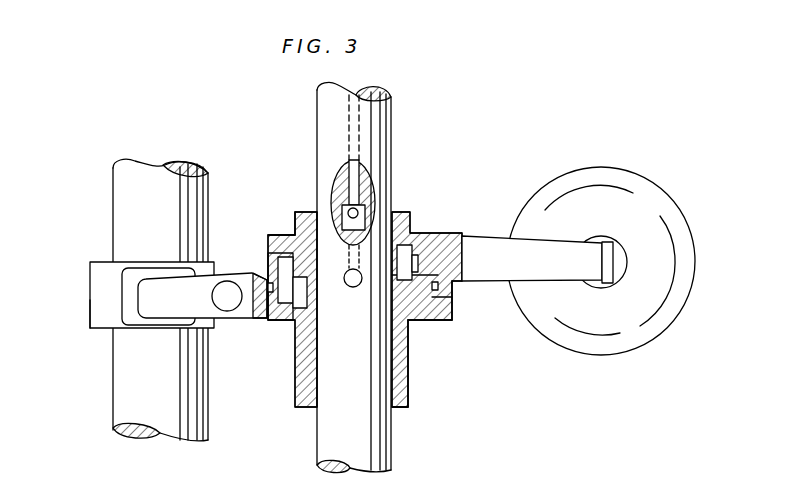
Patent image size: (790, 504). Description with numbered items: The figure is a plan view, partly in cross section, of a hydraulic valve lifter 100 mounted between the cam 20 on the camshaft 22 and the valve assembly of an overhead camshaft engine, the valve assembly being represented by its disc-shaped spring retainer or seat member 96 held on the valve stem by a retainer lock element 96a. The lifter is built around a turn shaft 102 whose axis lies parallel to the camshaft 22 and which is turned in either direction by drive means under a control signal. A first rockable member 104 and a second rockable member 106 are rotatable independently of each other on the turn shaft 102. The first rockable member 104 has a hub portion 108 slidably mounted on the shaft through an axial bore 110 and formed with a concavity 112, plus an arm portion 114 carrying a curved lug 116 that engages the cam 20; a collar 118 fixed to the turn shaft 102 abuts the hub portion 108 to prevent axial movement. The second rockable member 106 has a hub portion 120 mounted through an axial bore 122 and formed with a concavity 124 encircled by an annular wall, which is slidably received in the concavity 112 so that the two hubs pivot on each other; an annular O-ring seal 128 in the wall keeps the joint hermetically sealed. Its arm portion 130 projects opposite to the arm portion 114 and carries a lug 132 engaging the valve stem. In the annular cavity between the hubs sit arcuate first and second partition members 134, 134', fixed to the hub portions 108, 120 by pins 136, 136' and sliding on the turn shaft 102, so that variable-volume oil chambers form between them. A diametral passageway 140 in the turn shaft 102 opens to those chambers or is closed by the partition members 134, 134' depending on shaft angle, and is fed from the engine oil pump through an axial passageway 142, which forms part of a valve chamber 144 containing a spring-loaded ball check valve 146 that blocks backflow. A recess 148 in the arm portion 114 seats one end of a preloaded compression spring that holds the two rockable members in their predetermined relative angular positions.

The cam 20 is at (93, 280).
The camshaft 22 is at (122, 202).
The spring retainer or seat member 96 is at (598, 348).
The retainer lock element 96a is at (632, 268).
The hydraulic valve lifter 100 is at (264, 162).
The turn shaft 102 is at (320, 117).
The first rockable member 104 is at (287, 323).
The second rockable member 106 is at (432, 232).
The hub portion 108 is at (452, 322).
The axial bore 110 is at (398, 373).
The concavity 112 is at (453, 297).
The arm portion 114 is at (228, 320).
The lug 116 is at (137, 317).
The collar 118 is at (397, 403).
The hub portion 120 is at (294, 223).
The axial bore 122 is at (318, 194).
The concavity 124 is at (273, 237).
The annular O-ring seal 128 is at (275, 272).
The arm portion 130 is at (495, 245).
The lug 132 is at (590, 288).
The first partition member 134 is at (258, 323).
The second partition member 134' is at (449, 282).
The pin 136 is at (282, 343).
The pin 136' is at (418, 232).
The diametral passageway 140 is at (350, 285).
The axial passageway 142 is at (358, 166).
The valve chamber 144 is at (363, 205).
The spring-loaded ball check valve 146 is at (341, 250).
The recess 148 is at (211, 297).